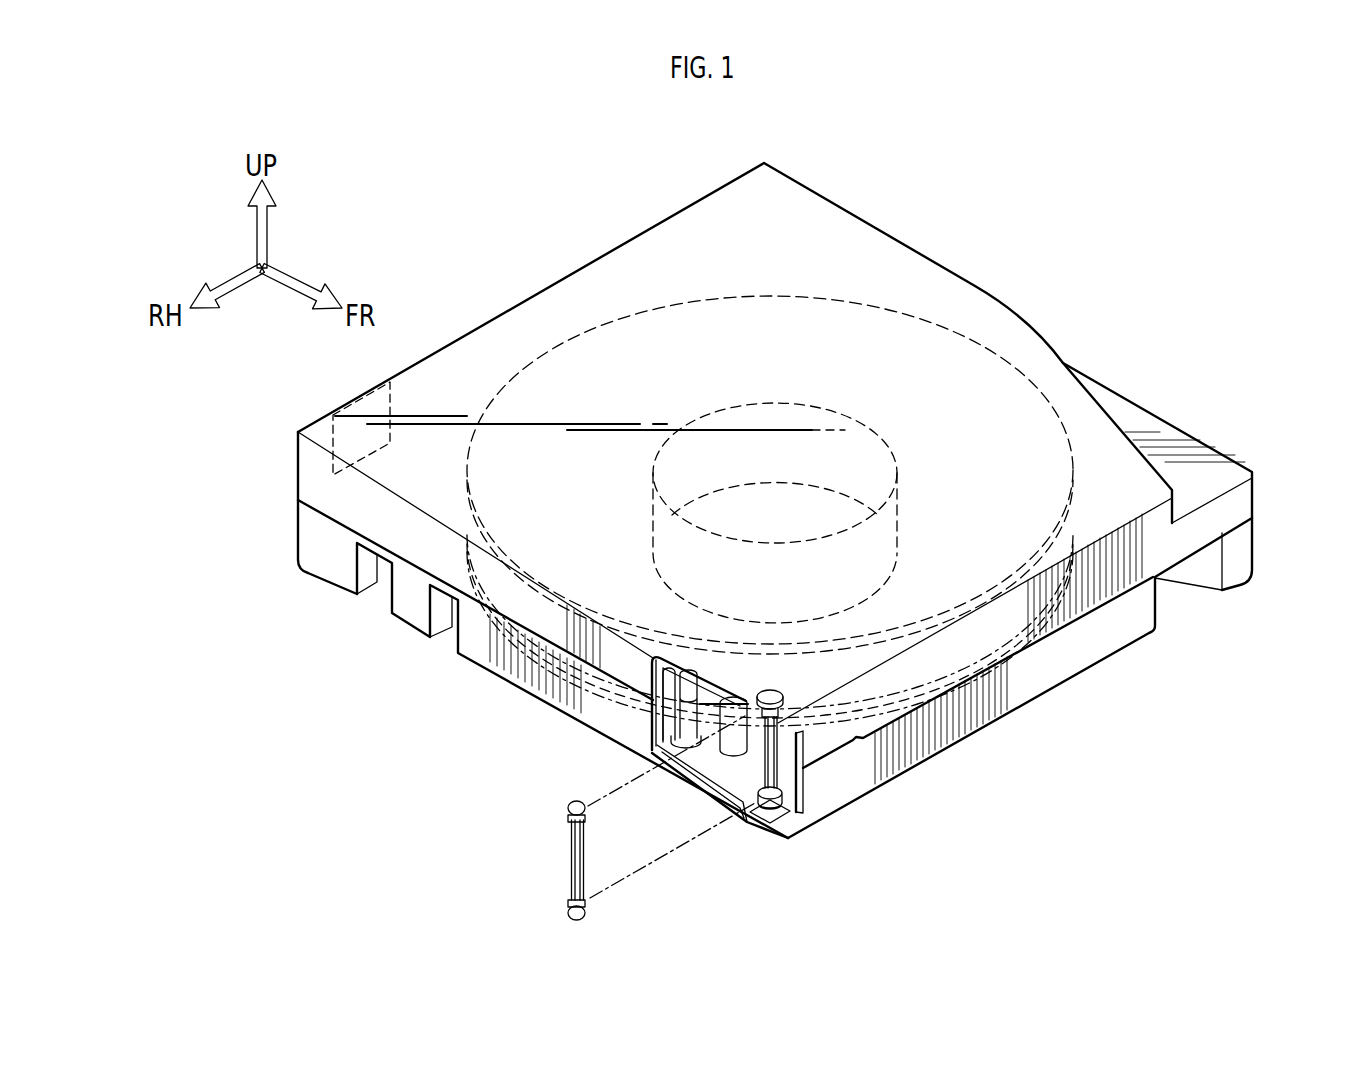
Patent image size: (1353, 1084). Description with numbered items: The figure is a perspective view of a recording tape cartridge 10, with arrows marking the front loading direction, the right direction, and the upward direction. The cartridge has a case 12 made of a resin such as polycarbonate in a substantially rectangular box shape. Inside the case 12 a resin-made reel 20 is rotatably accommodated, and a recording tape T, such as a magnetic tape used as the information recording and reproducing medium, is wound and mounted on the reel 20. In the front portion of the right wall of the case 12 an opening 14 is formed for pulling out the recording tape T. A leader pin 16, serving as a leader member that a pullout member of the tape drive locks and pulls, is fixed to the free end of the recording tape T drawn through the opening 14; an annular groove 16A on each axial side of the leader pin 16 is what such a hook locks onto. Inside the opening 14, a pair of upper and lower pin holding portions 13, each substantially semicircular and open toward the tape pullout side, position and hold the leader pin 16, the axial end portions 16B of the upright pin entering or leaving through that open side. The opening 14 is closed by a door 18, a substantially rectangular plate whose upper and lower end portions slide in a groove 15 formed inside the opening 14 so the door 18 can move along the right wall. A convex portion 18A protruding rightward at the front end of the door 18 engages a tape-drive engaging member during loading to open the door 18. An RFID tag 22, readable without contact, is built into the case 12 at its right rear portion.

The recording tape cartridge 10 is at (938, 237).
The case 12 is at (630, 272).
The pin holding portion 13 is at (768, 690).
The opening 14 is at (740, 776).
The groove 15 is at (735, 778).
The leader pin 16 is at (568, 837).
The annular groove 16A is at (568, 818).
The axial end portion 16B is at (568, 796).
The door 18 is at (652, 723).
The convex portion 18A is at (659, 678).
The reel 20 is at (786, 298).
The RFID tag 22 is at (333, 420).
The recording tape T is at (637, 868).